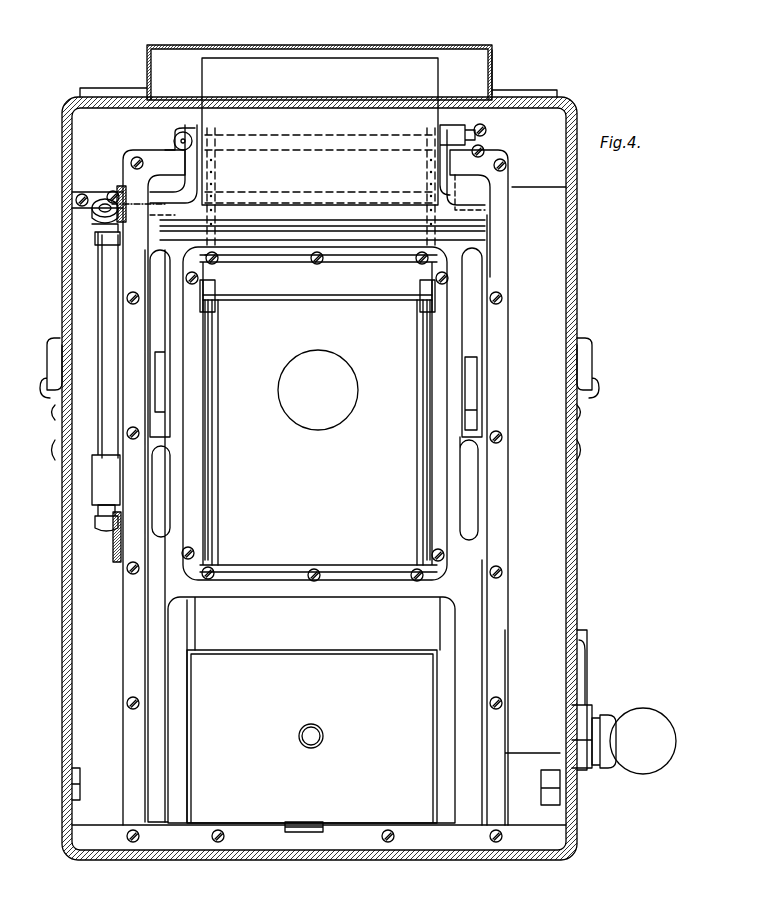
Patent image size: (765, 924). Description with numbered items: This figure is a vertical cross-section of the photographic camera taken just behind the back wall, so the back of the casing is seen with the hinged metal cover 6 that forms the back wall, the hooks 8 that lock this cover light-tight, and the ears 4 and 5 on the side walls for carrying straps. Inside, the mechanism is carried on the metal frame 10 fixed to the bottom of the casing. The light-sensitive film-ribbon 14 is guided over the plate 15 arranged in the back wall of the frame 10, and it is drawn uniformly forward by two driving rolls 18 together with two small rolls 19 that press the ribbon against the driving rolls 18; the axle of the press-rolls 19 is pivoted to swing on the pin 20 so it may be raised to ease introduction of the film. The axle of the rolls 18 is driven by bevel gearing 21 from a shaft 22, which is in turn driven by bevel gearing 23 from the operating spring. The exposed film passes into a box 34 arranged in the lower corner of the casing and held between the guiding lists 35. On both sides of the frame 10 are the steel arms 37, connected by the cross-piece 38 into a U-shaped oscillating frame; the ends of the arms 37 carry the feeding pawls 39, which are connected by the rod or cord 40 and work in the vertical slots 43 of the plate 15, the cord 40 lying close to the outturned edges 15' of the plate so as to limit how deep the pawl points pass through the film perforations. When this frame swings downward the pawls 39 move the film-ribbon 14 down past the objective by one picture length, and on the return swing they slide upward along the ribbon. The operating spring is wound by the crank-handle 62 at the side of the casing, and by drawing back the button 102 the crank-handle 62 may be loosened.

The ear 4 is at (585, 362).
The ear 5 is at (48, 362).
The metal cover 6 is at (494, 62).
The hook 8 is at (79, 789).
The metal frame 10 is at (130, 637).
The film-ribbon 14 is at (440, 76).
The plate 15 is at (315, 414).
The outturned edges 15' is at (317, 432).
The driving roll 18 is at (213, 176).
The small roll 19 is at (207, 132).
The pin 20 is at (176, 139).
The bevel gearing 21 is at (118, 190).
The shaft 22 is at (110, 272).
The bevel gearing 23 is at (116, 548).
The box 34 is at (312, 741).
The guiding lists 35 is at (176, 683).
The arm 37 is at (161, 340).
The cross-piece 38 is at (353, 226).
The feeding pawl 39 is at (218, 309).
The rod or cord 40 is at (350, 296).
The vertical slot 43 is at (208, 450).
The crank-handle 62 is at (586, 683).
The button 102 is at (648, 728).